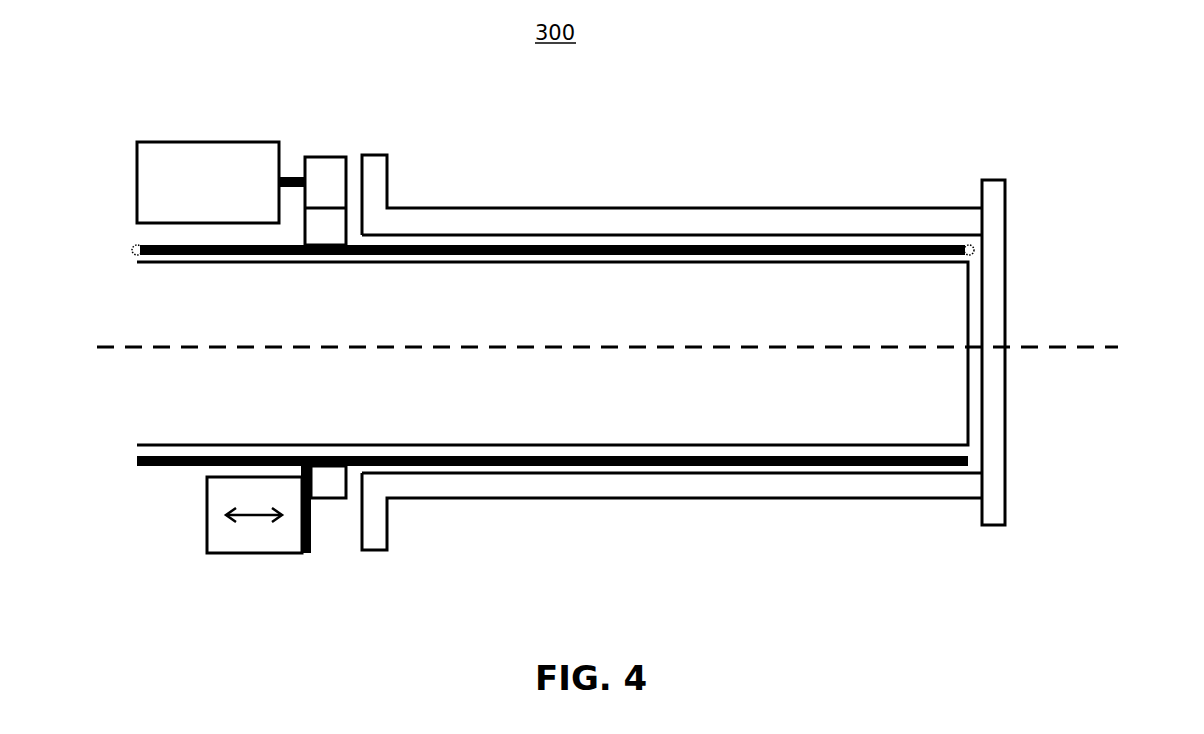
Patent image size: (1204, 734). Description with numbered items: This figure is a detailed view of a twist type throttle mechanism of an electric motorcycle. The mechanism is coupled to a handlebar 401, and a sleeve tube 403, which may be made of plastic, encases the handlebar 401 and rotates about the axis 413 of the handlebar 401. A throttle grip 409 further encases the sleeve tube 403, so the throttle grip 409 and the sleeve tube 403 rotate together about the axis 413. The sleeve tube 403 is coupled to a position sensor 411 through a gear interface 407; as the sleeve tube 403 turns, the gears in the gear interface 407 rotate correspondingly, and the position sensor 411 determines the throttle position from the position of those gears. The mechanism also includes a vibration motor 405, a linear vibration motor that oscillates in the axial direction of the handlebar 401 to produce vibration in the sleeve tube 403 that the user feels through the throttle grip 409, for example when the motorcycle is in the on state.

The handlebar 401 is at (932, 402).
The sleeve tube 403 is at (600, 463).
The vibration motor 405 is at (207, 495).
The gear interface 407 is at (345, 140).
The throttle grip 409 is at (792, 195).
The position sensor 411 is at (172, 128).
The axis 413 is at (632, 347).